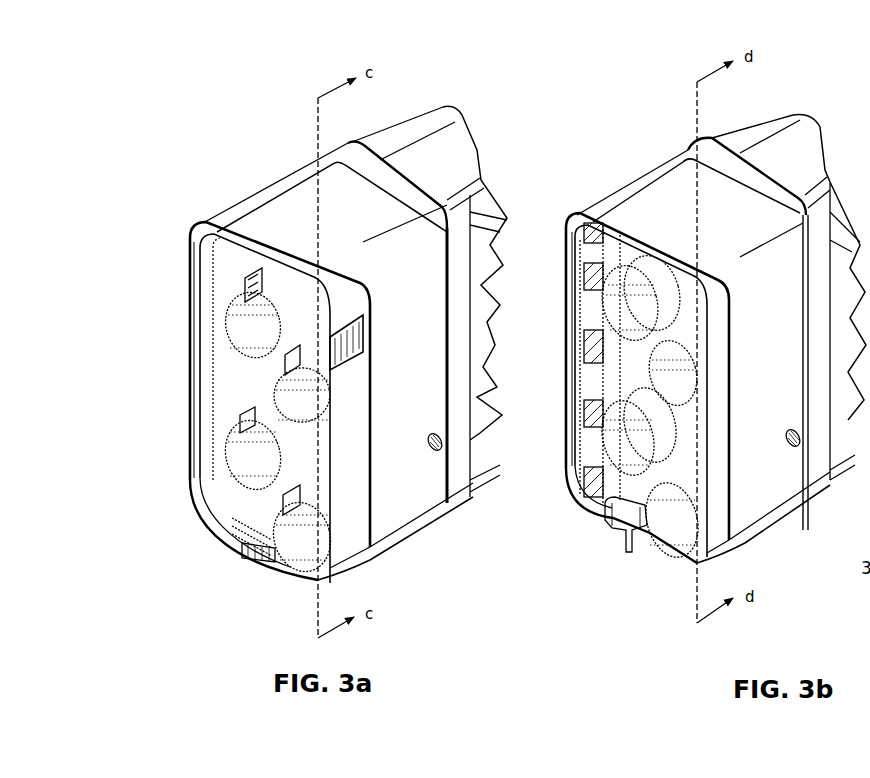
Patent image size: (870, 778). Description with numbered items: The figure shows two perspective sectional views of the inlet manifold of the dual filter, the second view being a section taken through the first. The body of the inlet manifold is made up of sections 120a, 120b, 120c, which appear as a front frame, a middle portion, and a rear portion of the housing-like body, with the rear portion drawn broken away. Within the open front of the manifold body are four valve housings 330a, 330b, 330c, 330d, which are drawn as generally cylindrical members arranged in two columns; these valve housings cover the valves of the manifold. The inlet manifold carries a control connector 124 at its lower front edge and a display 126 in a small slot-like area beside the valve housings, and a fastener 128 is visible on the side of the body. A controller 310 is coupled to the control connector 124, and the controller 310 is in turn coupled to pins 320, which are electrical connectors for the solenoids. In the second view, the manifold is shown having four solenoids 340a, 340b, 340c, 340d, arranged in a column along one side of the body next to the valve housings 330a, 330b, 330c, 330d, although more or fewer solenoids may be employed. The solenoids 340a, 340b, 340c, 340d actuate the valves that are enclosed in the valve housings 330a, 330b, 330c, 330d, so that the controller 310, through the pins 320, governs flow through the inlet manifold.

In FIG. 3A, the section of inlet manifold 120a is at (232, 233).
In FIG. 3A, the section of inlet manifold 120b is at (292, 177).
In FIG. 3A, the section of inlet manifold 120c is at (435, 197).
In FIG. 3A, the controller 310 is at (212, 273).
In FIG. 3A, the pins 320 is at (210, 373).
In FIG. 3A, the valve housing 330a is at (252, 316).
In FIG. 3B, the valve housing 330a is at (641, 297).
In FIG. 3A, the valve housing 330b is at (253, 451).
In FIG. 3B, the valve housing 330b is at (639, 431).
In FIG. 3A, the valve housing 330c is at (302, 386).
In FIG. 3B, the valve housing 330c is at (673, 373).
In FIG. 3A, the valve housing 330d is at (302, 531).
In FIG. 3B, the valve housing 330d is at (672, 520).
In FIG. 3A, the control connector 124 is at (251, 557).
In FIG. 3B, the control connector 124 is at (605, 535).
In FIG. 3A, the display 126 is at (345, 342).
In FIG. 3A, the fastener 128 is at (440, 450).
In FIG. 3B, the fastener 128 is at (800, 441).
In FIG. 3B, the solenoid 340a is at (593, 233).
In FIG. 3B, the solenoid 340b is at (583, 287).
In FIG. 3B, the solenoid 340c is at (580, 360).
In FIG. 3B, the solenoid 340d is at (583, 433).